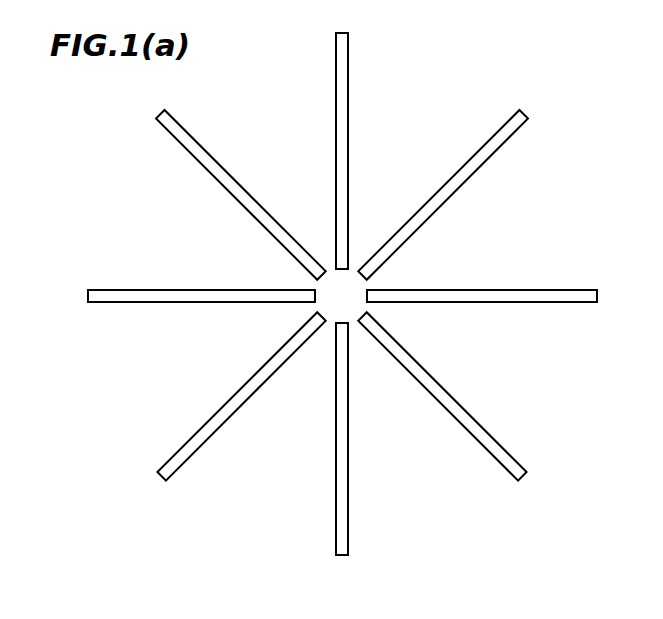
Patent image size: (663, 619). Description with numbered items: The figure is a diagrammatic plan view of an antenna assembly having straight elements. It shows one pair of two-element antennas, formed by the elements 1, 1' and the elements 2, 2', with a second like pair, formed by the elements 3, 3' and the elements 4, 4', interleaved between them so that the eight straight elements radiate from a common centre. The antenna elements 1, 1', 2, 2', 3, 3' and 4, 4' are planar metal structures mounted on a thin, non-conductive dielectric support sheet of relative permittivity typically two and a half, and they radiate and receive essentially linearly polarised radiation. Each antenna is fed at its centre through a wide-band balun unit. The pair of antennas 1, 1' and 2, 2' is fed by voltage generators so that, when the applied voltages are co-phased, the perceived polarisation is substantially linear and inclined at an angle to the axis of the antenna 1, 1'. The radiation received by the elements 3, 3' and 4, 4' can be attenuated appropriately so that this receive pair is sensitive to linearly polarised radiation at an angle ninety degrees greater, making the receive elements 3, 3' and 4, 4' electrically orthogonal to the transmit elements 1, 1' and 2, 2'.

The antenna element 1 is at (354, 144).
The antenna element 2 is at (495, 295).
The antenna element 3 is at (453, 195).
The antenna element 4 is at (453, 411).
The antenna element 1' is at (357, 445).
The antenna element 2' is at (184, 291).
The antenna element 3' is at (225, 400).
The antenna element 4' is at (224, 193).